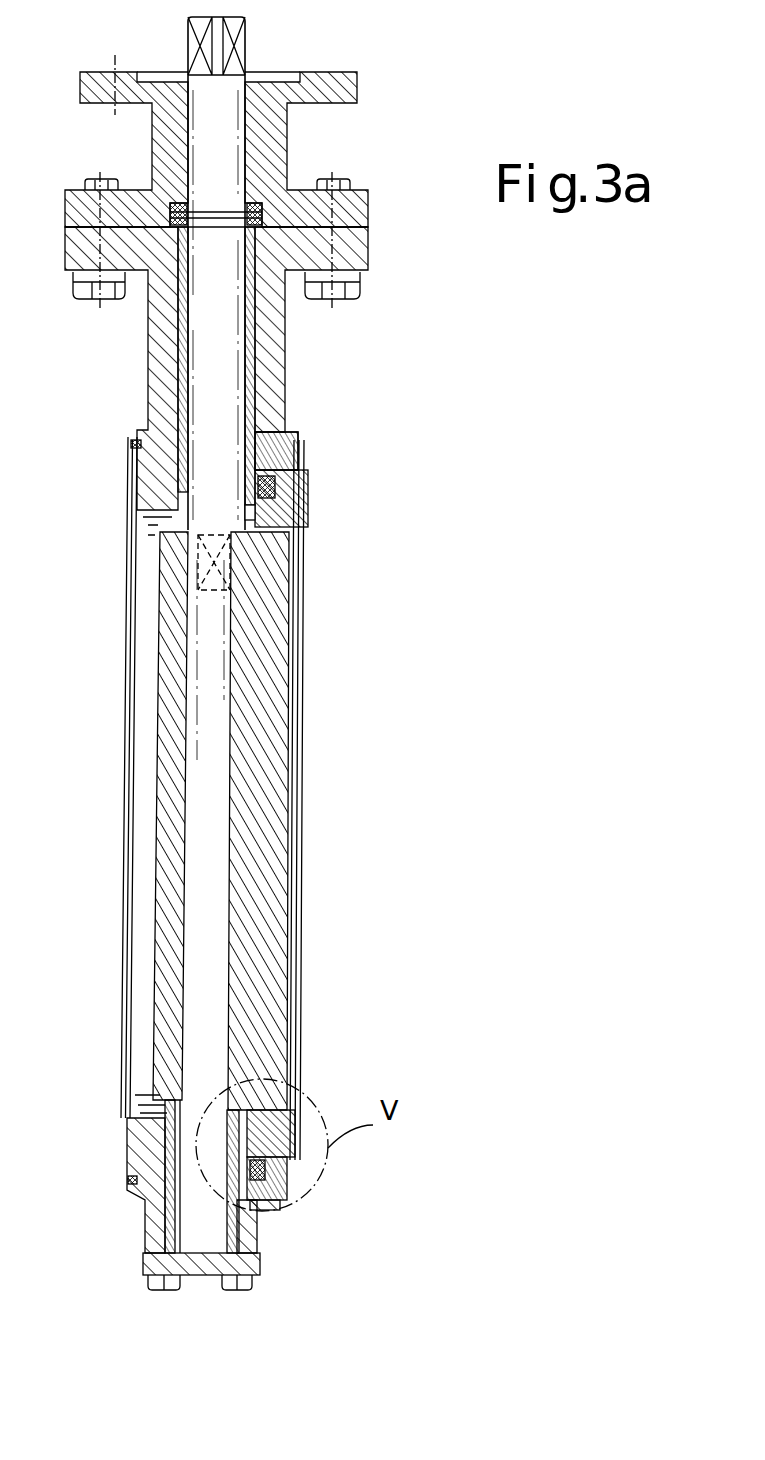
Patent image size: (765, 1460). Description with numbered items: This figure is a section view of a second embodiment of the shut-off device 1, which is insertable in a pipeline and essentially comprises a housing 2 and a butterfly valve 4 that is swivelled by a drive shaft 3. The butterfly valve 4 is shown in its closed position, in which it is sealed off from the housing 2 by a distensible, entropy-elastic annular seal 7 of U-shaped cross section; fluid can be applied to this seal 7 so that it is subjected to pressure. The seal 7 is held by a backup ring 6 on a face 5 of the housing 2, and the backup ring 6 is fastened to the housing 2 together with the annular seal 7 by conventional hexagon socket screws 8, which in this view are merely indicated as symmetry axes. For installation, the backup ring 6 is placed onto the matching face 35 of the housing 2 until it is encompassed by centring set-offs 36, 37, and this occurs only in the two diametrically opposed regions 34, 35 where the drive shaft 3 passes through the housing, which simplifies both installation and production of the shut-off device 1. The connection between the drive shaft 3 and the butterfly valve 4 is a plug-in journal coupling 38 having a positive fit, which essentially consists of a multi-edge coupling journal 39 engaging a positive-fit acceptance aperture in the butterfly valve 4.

The shut-off device 1 is at (133, 1292).
The housing 2 is at (318, 112).
The drive shaft 3 is at (232, 152).
The butterfly valve 4 is at (270, 710).
The face 5 is at (300, 440).
The backup ring 6 is at (292, 466).
The annular seal 7 is at (300, 520).
The hexagon socket screws 8 is at (305, 453).
The region of through-guide 34 is at (290, 425).
The matching face 35 is at (262, 1200).
The centring set-off 36 is at (285, 437).
The centring set-off 37 is at (275, 1200).
The journal coupling 38 is at (195, 560).
The multi-edge coupling journal 39 is at (200, 578).